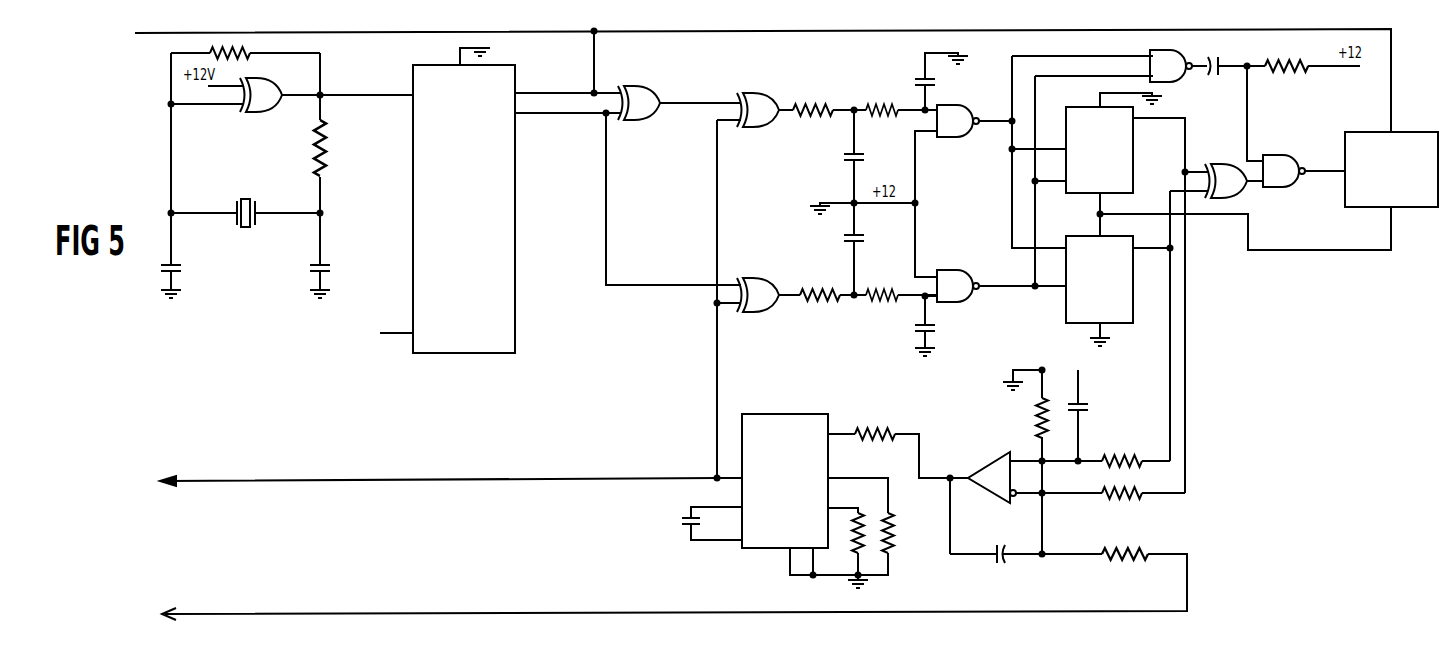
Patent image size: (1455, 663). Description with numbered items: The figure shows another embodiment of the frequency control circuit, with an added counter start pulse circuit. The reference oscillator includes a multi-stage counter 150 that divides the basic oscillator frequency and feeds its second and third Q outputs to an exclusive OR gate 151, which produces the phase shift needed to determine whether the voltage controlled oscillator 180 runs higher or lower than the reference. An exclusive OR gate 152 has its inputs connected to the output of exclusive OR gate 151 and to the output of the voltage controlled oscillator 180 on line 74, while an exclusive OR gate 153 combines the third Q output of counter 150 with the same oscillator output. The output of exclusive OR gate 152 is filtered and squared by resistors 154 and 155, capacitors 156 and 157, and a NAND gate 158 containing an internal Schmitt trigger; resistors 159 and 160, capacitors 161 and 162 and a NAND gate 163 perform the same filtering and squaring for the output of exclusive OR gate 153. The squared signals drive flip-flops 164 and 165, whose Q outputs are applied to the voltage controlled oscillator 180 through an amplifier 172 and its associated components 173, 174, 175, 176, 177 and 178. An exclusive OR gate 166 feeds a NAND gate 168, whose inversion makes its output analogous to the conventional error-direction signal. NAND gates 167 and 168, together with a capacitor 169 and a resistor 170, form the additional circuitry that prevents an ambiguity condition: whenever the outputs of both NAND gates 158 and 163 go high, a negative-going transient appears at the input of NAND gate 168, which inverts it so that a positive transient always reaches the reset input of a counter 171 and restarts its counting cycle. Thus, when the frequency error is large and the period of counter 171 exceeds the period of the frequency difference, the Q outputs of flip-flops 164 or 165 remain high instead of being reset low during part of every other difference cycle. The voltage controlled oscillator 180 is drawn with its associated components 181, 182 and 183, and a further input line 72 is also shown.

The line from load divider and synch 72 is at (535, 612).
The line 74 is at (522, 479).
The multi-stage counter 150 is at (474, 214).
The exclusive OR gate 151 is at (647, 87).
The exclusive OR gate 152 is at (757, 92).
The exclusive OR gate 153 is at (757, 280).
The resistor 154 is at (813, 100).
The resistor 155 is at (883, 100).
The capacitor 156 is at (842, 157).
The capacitor 157 is at (928, 86).
The NAND gate 158 is at (950, 138).
The resistor 159 is at (820, 307).
The resistor 160 is at (882, 307).
The capacitor 161 is at (842, 240).
The capacitor 162 is at (932, 330).
The NAND gate 163 is at (972, 272).
The flip-flop 164 is at (1133, 147).
The flip-flop 165 is at (1120, 324).
The exclusive OR gate 166 is at (1240, 192).
The NAND gate 167 is at (1150, 52).
The NAND gate 168 is at (1296, 155).
The capacitor 169 is at (1219, 58).
The resistor 170 is at (1288, 72).
The counter 171 is at (1345, 208).
The amplifier 172 is at (990, 457).
The resistor 173 is at (1032, 416).
The resistor 174 is at (1122, 453).
The resistor 175 is at (1115, 500).
The resistor 176 is at (1125, 568).
The capacitor 177 is at (1086, 409).
The capacitor 178 is at (1000, 566).
The voltage controlled oscillator 180 is at (790, 414).
The resistor 181 is at (875, 427).
The resistor 182 is at (852, 552).
The resistor 183 is at (893, 531).